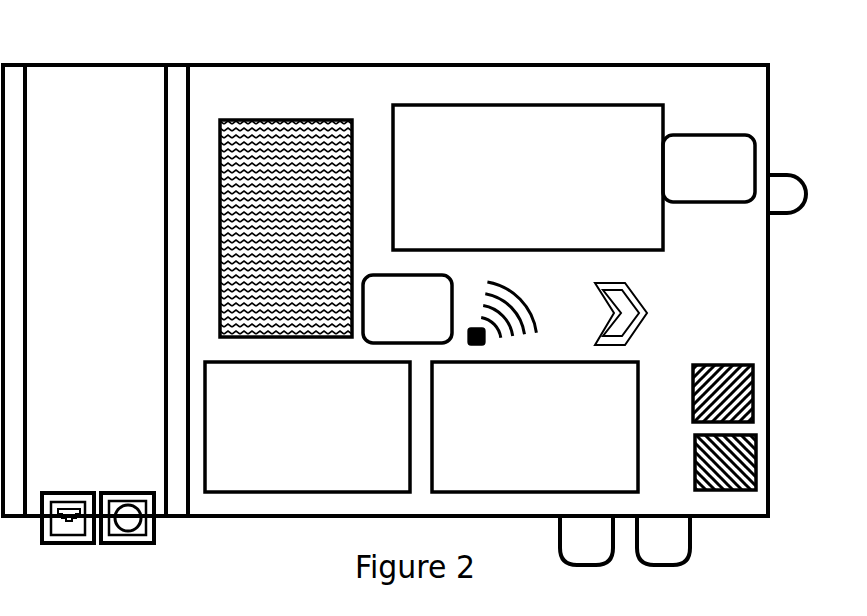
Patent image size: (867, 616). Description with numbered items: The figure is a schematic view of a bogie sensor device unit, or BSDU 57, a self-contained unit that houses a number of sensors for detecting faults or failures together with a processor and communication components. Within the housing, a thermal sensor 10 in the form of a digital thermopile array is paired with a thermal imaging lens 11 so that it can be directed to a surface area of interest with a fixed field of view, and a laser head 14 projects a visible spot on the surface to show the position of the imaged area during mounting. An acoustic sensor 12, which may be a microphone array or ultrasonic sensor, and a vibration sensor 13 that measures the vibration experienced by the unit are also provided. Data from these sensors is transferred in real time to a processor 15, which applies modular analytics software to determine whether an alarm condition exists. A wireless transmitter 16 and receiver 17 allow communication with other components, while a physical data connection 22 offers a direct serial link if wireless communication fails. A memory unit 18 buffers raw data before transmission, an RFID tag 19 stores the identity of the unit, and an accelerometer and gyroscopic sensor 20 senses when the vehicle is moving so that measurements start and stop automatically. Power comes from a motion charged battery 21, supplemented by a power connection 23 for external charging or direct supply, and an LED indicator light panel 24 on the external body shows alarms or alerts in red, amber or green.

The bogie sensor device unit 57 is at (642, 50).
The motion charged battery 21 is at (89, 300).
The processor 15 is at (309, 166).
The thermal sensor 10 is at (516, 193).
The thermal imaging lens 11 is at (701, 183).
The laser head 14 is at (784, 205).
The receiver 17 is at (396, 322).
The RFID tag 19 is at (487, 335).
The accelerometer and gyroscopic sensor 20 is at (631, 317).
The wireless transmitter 16 is at (713, 390).
The memory unit 18 is at (717, 456).
The acoustic sensor 12 is at (307, 437).
The vibration sensor 13 is at (532, 437).
The physical data connection 22 is at (73, 507).
The power connection 23 is at (128, 512).
The LED indicator light panel 24 is at (590, 530).